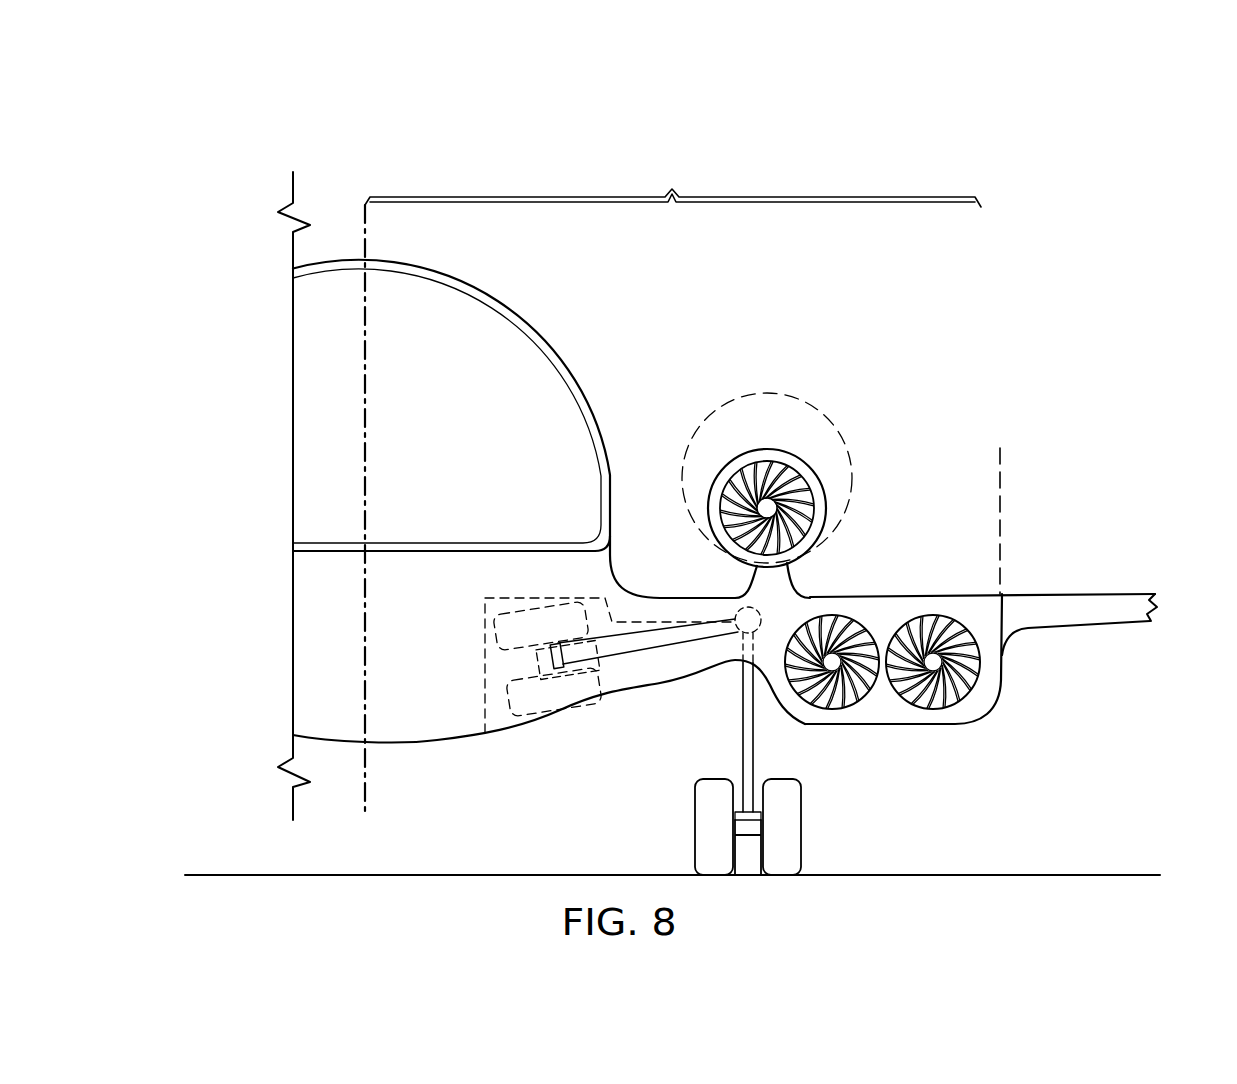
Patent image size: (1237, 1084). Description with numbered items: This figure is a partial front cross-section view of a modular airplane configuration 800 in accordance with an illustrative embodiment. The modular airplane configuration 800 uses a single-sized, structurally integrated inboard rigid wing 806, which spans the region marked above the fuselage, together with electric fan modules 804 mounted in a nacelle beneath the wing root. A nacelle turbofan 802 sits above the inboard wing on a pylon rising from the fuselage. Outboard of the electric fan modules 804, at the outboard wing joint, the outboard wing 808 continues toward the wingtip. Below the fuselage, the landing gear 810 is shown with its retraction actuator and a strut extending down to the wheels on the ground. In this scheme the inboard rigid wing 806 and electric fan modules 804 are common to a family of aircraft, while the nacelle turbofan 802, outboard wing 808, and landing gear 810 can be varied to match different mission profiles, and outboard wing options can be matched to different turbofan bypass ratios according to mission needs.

The modular airplane configuration 800 is at (391, 125).
The nacelle turbofan 802 is at (810, 407).
The electric fan modules 804 is at (901, 725).
The inboard rigid wing 806 is at (673, 182).
The outboard wing 808 is at (1088, 628).
The landing gear 810 is at (493, 632).